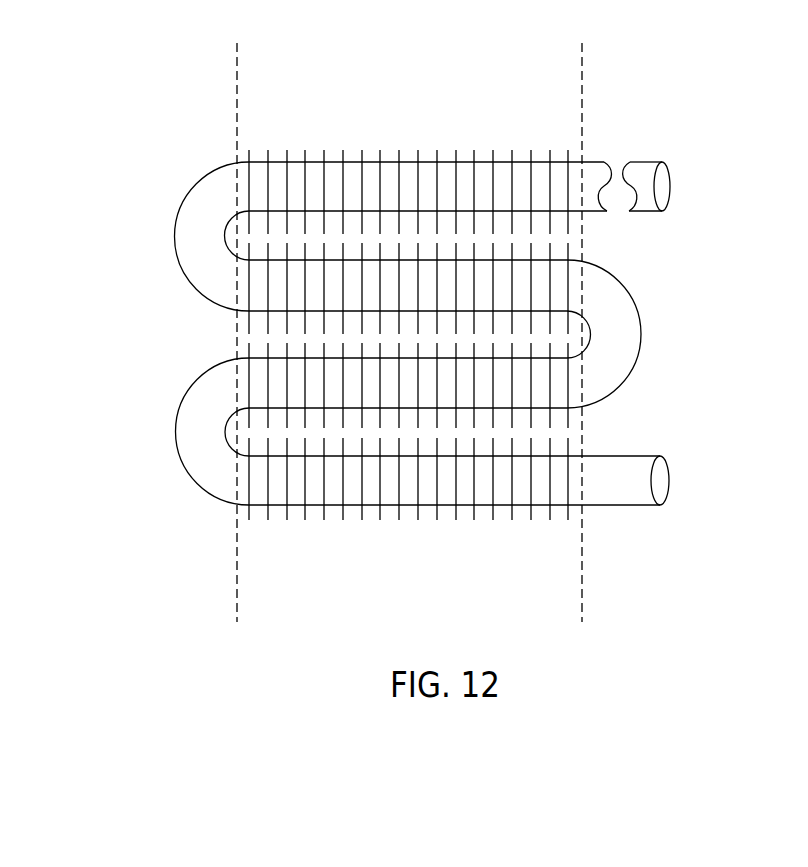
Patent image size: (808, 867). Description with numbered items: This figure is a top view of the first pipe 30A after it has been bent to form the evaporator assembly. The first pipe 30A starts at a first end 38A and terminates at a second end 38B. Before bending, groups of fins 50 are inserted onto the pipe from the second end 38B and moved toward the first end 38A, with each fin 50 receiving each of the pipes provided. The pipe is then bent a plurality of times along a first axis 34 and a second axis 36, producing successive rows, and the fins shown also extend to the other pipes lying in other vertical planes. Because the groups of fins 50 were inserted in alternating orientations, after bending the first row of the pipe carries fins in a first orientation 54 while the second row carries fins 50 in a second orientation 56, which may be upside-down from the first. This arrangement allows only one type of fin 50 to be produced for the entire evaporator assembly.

The first pipe 30A is at (685, 463).
The first axis 34 is at (233, 563).
The second axis 36 is at (586, 573).
The first end 38A is at (664, 495).
The second end 38B is at (668, 178).
The fin 50 is at (300, 528).
The first orientation 54 is at (391, 528).
The second orientation 56 is at (354, 137).